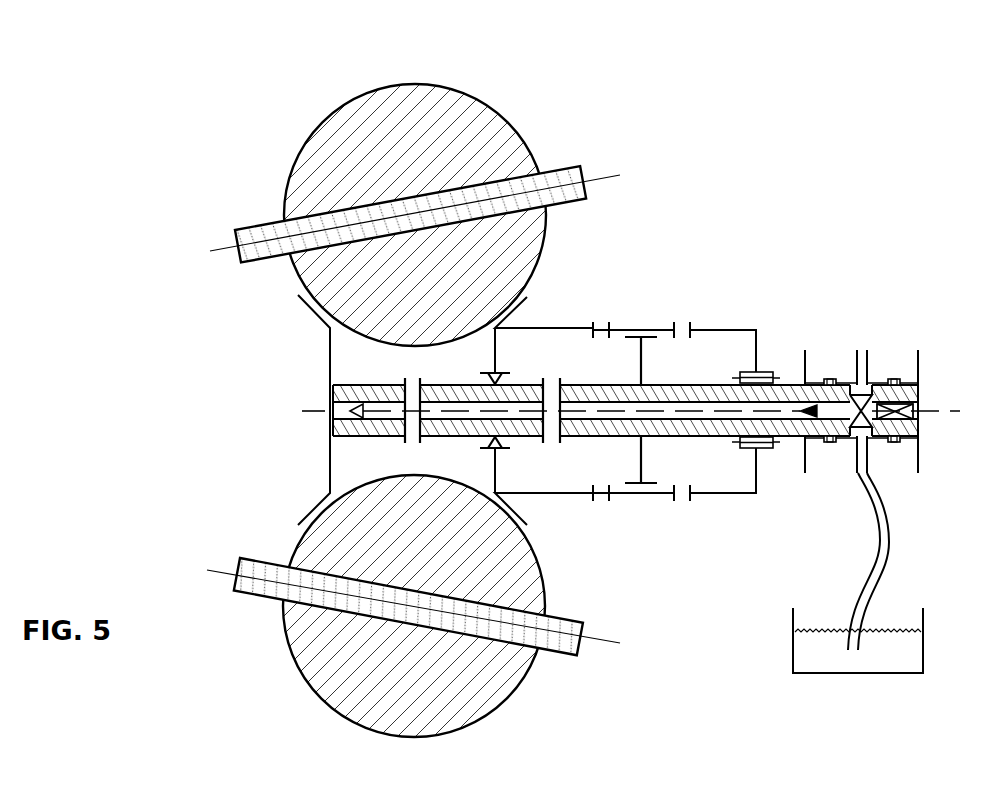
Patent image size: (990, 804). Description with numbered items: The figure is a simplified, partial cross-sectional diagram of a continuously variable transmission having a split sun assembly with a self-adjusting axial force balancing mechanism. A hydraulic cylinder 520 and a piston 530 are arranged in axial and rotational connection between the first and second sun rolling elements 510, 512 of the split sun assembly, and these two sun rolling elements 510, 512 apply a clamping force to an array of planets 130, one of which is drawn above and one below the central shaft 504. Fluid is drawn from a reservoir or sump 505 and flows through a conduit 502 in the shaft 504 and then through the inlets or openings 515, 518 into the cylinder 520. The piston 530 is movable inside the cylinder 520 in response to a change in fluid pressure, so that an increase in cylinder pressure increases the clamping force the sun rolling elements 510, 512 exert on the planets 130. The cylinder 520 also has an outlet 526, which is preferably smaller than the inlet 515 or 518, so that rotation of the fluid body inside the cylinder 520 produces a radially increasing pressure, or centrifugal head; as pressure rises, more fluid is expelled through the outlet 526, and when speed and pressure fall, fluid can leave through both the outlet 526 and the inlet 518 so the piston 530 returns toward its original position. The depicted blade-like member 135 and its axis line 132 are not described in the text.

The planets 130 is at (411, 84).
The blade 135 is at (573, 166).
The blade axis 132 is at (607, 175).
The first sun rolling element 510 is at (305, 306).
The inlet 515 is at (408, 372).
The shaft 504 is at (333, 423).
The second sun rolling element 512 is at (527, 297).
The inlet 518 is at (555, 362).
The outlet 526 is at (685, 310).
The piston 530 is at (642, 363).
The hydraulic cylinder 520 is at (757, 351).
The conduit 502 is at (827, 379).
The reservoir 505 is at (857, 673).